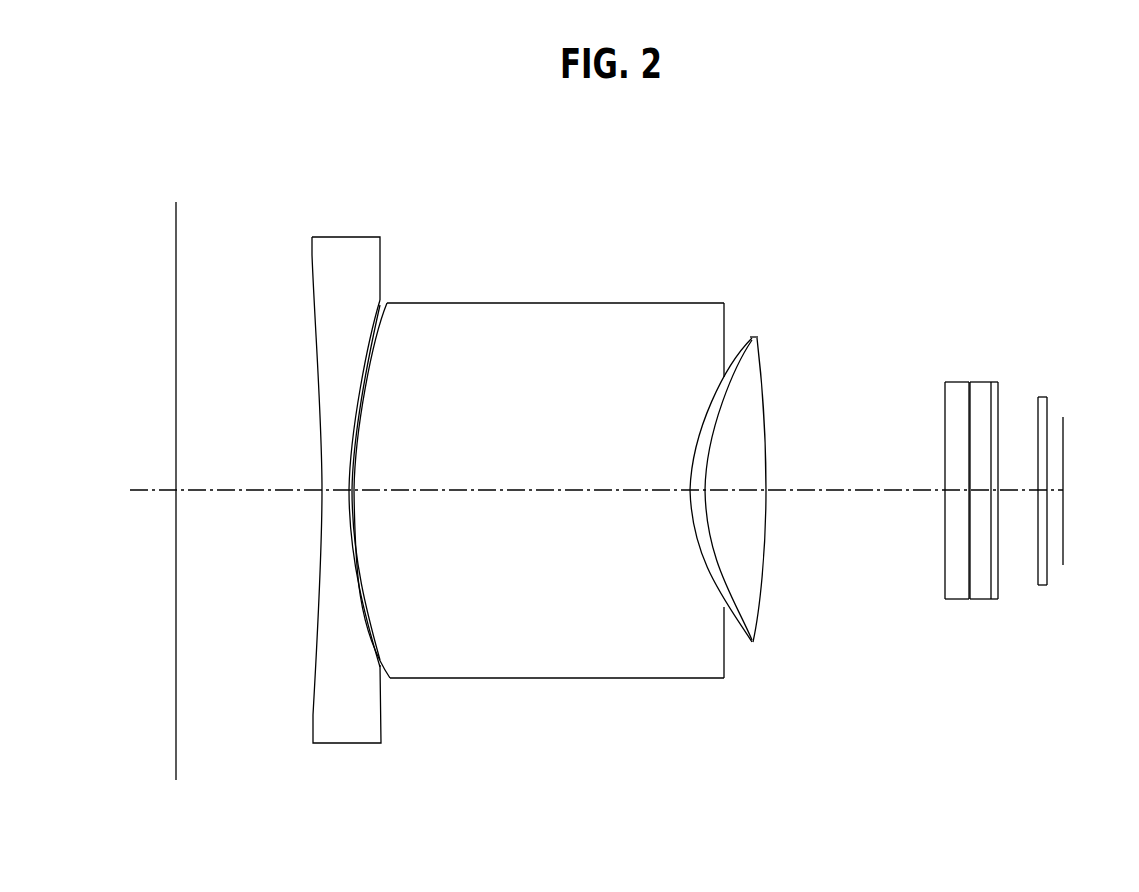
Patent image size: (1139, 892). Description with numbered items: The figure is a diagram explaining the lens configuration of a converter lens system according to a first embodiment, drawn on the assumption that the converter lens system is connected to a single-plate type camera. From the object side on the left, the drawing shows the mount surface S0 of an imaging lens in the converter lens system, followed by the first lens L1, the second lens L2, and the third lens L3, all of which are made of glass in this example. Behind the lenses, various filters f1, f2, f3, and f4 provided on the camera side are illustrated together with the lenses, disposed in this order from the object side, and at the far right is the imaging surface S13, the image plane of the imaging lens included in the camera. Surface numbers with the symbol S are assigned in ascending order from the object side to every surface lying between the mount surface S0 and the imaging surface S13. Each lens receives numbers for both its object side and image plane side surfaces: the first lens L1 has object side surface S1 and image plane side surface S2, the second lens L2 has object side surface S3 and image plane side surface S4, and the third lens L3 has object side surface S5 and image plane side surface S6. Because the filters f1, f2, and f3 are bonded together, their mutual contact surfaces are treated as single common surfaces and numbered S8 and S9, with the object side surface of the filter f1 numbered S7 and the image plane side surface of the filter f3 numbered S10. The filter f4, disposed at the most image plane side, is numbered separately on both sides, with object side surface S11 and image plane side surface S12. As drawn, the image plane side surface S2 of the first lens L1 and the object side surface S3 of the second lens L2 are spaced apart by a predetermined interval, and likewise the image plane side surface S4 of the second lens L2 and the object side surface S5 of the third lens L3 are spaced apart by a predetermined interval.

The mount surface S0 is at (177, 222).
The object side surface of first lens S1 is at (314, 288).
The first lens L1 is at (340, 250).
The image plane side surface of first lens S2 is at (375, 336).
The object side surface of second lens S3 is at (370, 365).
The second lens L2 is at (553, 323).
The image plane side surface of second lens S4 is at (710, 402).
The object side surface of third lens S5 is at (752, 338).
The third lens L3 is at (755, 402).
The image plane side surface of third lens S6 is at (766, 413).
The object side surface of first filter S7 is at (945, 403).
The common surface between first and second filters S8 is at (969, 405).
The common surface between second and third filters S9 is at (991, 404).
The image plane side surface of third filter S10 is at (998, 404).
The object side surface of fourth filter S11 is at (1038, 575).
The image plane side surface of fourth filter S12 is at (1047, 578).
The imaging surface S13 is at (1063, 427).
The first filter f1 is at (955, 600).
The second filter f2 is at (980, 600).
The third filter f3 is at (993, 600).
The fourth filter f4 is at (1043, 585).